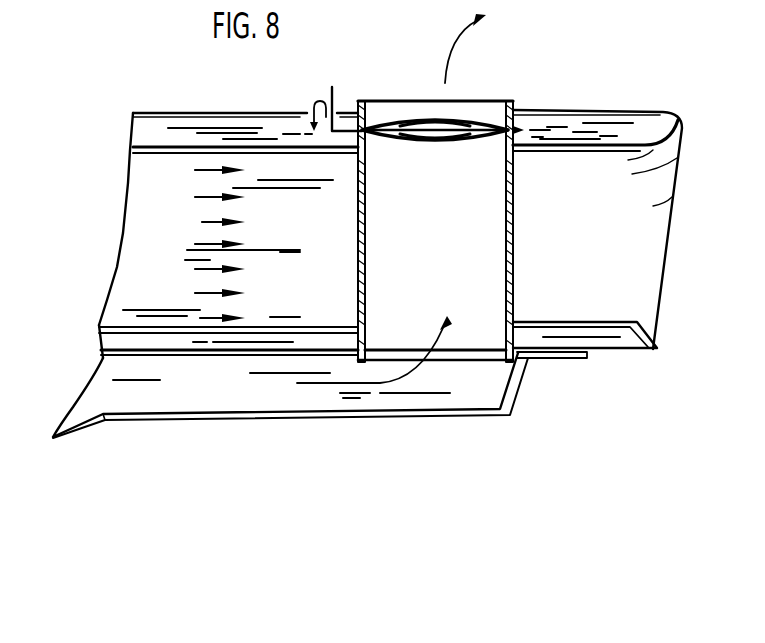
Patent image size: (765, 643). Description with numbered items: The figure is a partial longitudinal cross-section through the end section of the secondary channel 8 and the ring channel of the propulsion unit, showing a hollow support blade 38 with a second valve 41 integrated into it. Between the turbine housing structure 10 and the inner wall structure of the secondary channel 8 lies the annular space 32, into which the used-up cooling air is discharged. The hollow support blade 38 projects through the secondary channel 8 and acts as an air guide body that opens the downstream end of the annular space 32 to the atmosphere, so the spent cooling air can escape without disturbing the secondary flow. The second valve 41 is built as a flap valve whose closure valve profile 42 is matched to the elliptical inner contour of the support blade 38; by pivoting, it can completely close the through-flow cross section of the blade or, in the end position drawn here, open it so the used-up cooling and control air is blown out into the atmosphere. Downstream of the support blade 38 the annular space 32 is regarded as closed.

The secondary channel 8 is at (158, 293).
The turbine housing structure 10 is at (232, 402).
The annular space 32 is at (192, 393).
The support blade 38 is at (360, 263).
The second valve 41 is at (483, 91).
The closure valve profile 42 is at (418, 112).